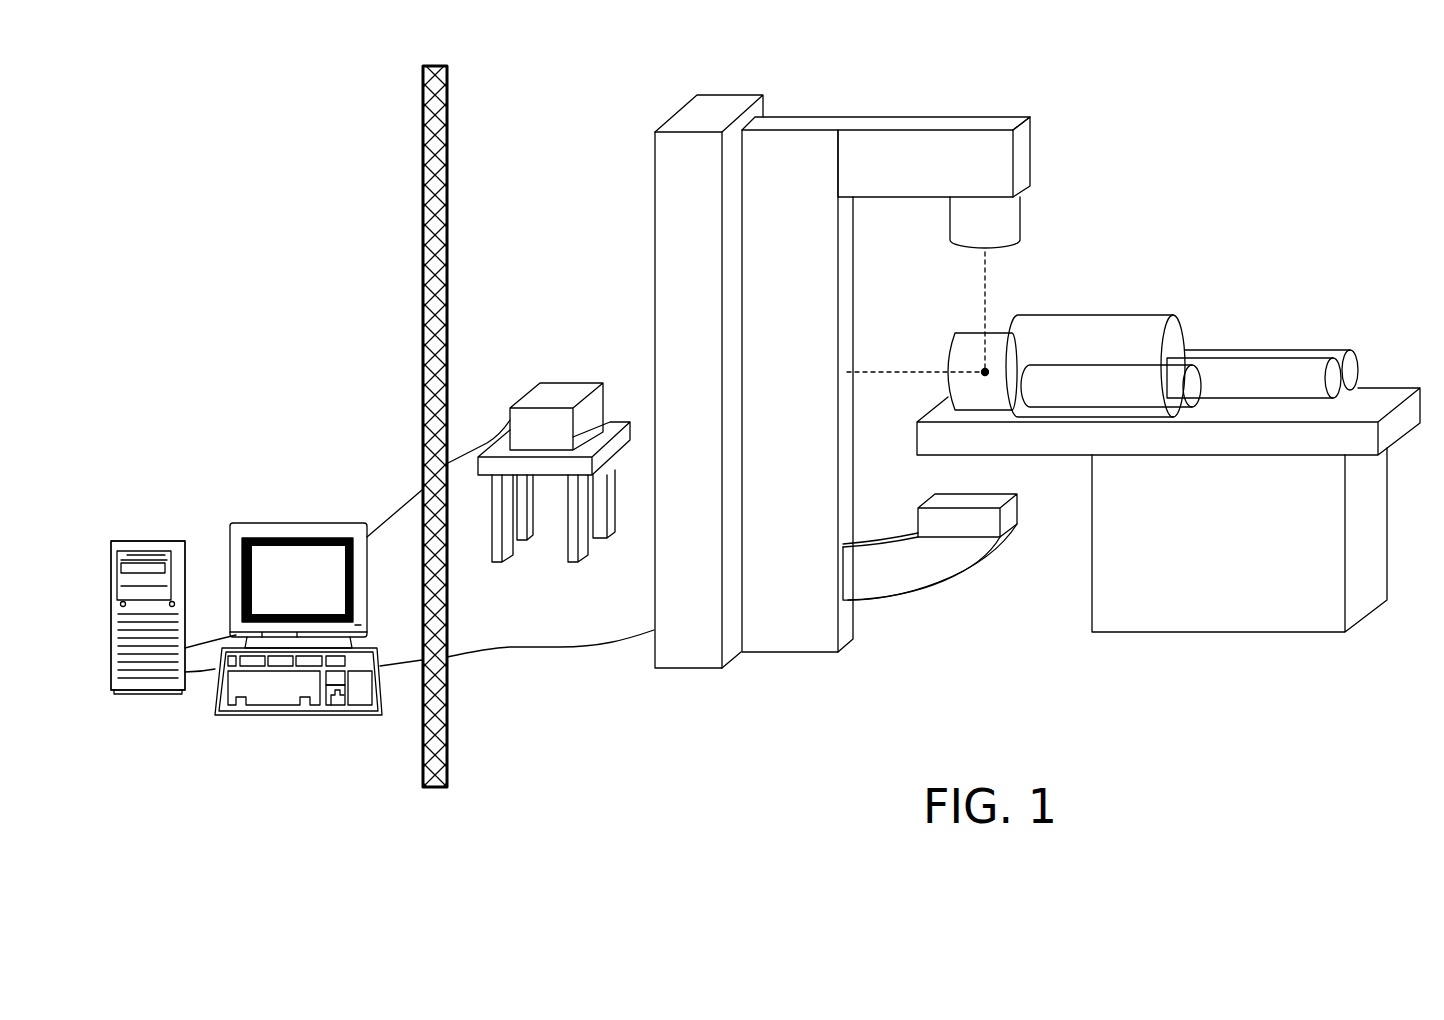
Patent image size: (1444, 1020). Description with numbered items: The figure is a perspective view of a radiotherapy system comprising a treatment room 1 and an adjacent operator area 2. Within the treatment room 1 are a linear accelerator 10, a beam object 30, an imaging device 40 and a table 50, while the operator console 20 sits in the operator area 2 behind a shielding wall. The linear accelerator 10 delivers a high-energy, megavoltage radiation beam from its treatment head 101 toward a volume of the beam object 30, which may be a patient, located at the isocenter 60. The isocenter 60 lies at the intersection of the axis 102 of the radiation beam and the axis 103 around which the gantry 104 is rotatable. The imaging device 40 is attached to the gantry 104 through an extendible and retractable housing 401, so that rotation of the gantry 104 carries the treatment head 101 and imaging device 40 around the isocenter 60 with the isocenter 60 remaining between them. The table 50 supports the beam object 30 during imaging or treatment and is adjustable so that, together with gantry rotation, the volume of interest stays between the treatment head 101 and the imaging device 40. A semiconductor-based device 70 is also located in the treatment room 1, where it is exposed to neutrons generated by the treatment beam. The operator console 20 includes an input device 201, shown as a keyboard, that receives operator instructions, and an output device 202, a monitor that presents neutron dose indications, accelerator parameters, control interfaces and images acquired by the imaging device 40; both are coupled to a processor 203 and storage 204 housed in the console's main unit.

The treatment room 1 is at (1318, 158).
The operator area 2 is at (298, 157).
The linear accelerator 10 is at (1068, 246).
The operator console 20 is at (266, 470).
The beam object 30 is at (1143, 313).
The imaging device 40 is at (1015, 514).
The table 50 is at (1367, 400).
The isocenter 60 is at (985, 377).
The semiconductor-based device 70 is at (557, 392).
The treatment head 101 is at (970, 250).
The axis of the radiation beam 102 is at (985, 303).
The gantry rotation axis 103 is at (921, 367).
The gantry 104 is at (804, 121).
The input device 201 is at (297, 715).
The output device 202 is at (298, 523).
The processor 203 is at (142, 590).
The storage 204 is at (170, 540).
The extendible and retractable housing 401 is at (915, 602).